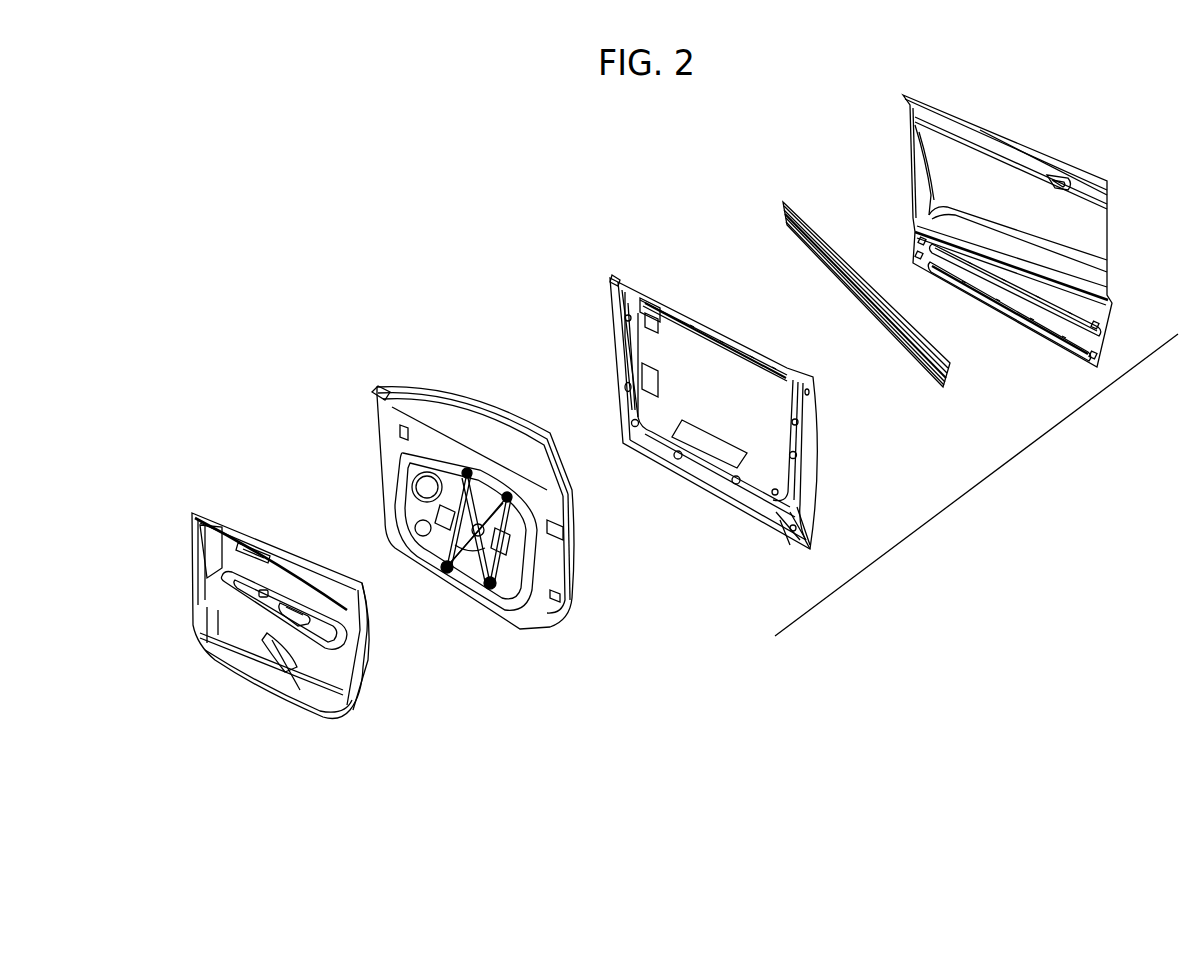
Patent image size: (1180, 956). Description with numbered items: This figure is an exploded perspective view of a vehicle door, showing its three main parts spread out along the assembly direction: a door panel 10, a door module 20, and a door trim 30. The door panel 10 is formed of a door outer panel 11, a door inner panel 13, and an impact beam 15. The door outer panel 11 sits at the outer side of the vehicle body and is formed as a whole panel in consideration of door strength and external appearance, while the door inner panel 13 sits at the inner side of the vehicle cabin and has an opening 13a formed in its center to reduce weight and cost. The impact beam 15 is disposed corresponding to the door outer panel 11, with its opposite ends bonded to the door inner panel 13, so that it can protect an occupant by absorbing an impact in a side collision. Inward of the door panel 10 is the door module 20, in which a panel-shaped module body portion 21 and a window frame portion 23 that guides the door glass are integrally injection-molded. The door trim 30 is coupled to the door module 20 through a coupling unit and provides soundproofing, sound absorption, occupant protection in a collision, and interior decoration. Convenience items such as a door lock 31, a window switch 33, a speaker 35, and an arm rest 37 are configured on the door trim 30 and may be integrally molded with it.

The door panel 10 is at (982, 482).
The door outer panel 11 is at (933, 165).
The door inner panel 13 is at (810, 437).
The opening 13a is at (758, 445).
The impact beam 15 is at (943, 382).
The door module 20 is at (494, 502).
The module body portion 21 is at (527, 608).
The window frame portion 23 is at (467, 384).
The door trim 30 is at (288, 610).
The door lock 31 is at (243, 551).
The window switch 33 is at (266, 593).
The speaker 35 is at (214, 596).
The arm rest 37 is at (320, 628).